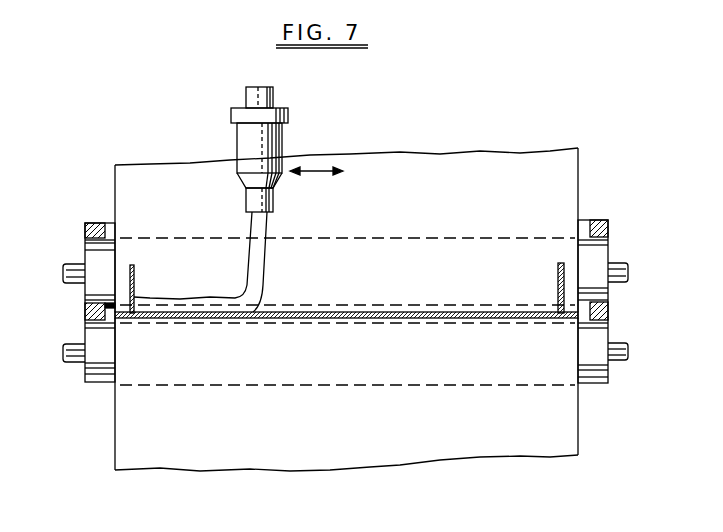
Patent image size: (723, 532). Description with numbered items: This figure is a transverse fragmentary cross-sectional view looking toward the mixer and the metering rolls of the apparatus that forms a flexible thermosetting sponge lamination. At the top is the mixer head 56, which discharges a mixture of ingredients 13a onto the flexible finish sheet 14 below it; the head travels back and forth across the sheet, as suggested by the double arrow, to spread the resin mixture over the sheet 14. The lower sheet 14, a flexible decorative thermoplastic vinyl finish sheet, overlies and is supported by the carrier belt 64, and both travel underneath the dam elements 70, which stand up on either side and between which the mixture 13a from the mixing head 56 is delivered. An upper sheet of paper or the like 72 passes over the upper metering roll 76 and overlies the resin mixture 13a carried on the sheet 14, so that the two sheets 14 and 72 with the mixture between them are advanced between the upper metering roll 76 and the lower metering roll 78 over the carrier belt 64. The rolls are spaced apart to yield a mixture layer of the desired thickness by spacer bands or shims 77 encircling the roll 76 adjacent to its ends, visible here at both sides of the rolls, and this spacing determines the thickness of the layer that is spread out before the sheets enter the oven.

The mixture of ingredients 13a is at (257, 228).
The flexible finish sheet 14 is at (410, 318).
The mixer head 56 is at (250, 137).
The belt 64 is at (392, 451).
The dam elements 70 is at (130, 278).
The upper sheet 72 is at (503, 162).
The upper metering roll 76 is at (600, 255).
The spacer bands or shims 77 is at (85, 231).
The lower metering roll 78 is at (600, 373).